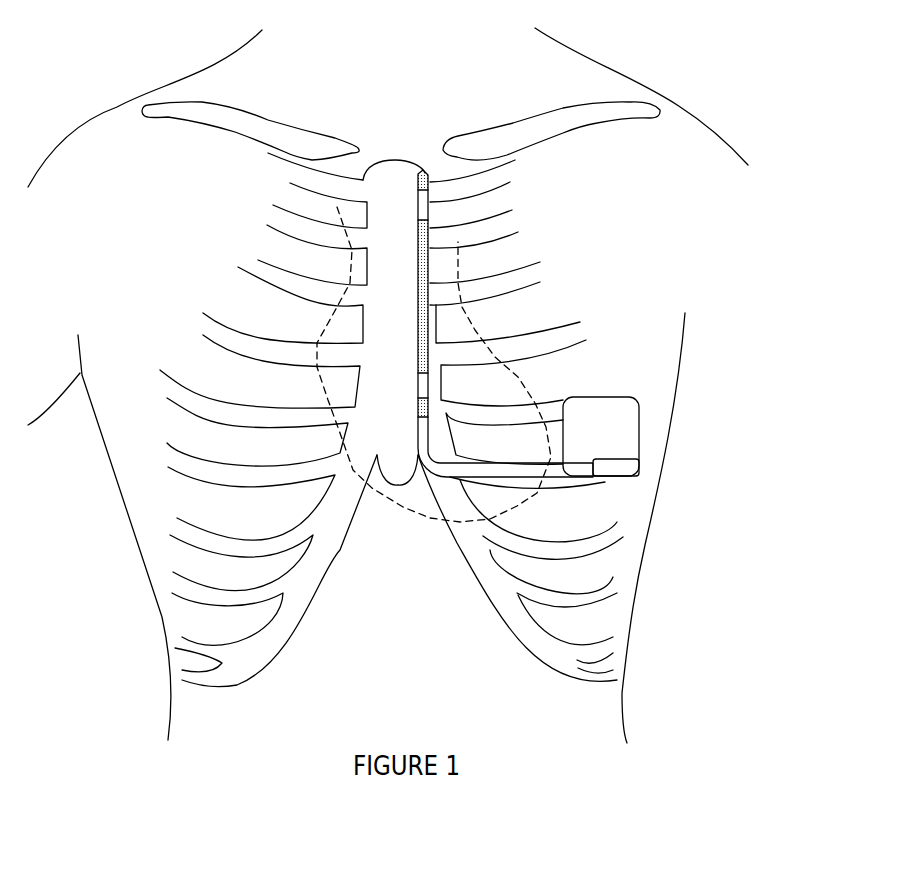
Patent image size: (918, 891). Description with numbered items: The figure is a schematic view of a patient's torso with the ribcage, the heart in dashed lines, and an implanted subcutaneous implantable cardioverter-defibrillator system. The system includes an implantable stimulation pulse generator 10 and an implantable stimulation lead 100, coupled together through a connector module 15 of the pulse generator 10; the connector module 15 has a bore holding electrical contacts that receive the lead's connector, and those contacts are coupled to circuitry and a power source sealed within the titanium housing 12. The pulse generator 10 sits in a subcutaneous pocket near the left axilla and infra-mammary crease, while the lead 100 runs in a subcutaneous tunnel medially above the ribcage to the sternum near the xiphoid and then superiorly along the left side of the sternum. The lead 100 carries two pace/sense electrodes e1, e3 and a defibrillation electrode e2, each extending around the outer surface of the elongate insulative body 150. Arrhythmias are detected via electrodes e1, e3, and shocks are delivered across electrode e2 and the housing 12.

The implantable stimulation pulse generator 10 is at (691, 442).
The housing 12 is at (618, 417).
The connector module 15 is at (627, 469).
The elongate insulative body 150 is at (394, 352).
The pace/sense electrode e1 is at (423, 171).
The defibrillation electrode e2 is at (428, 260).
The pace/sense electrode e3 is at (425, 411).
The implantable stimulation lead 100 is at (489, 504).